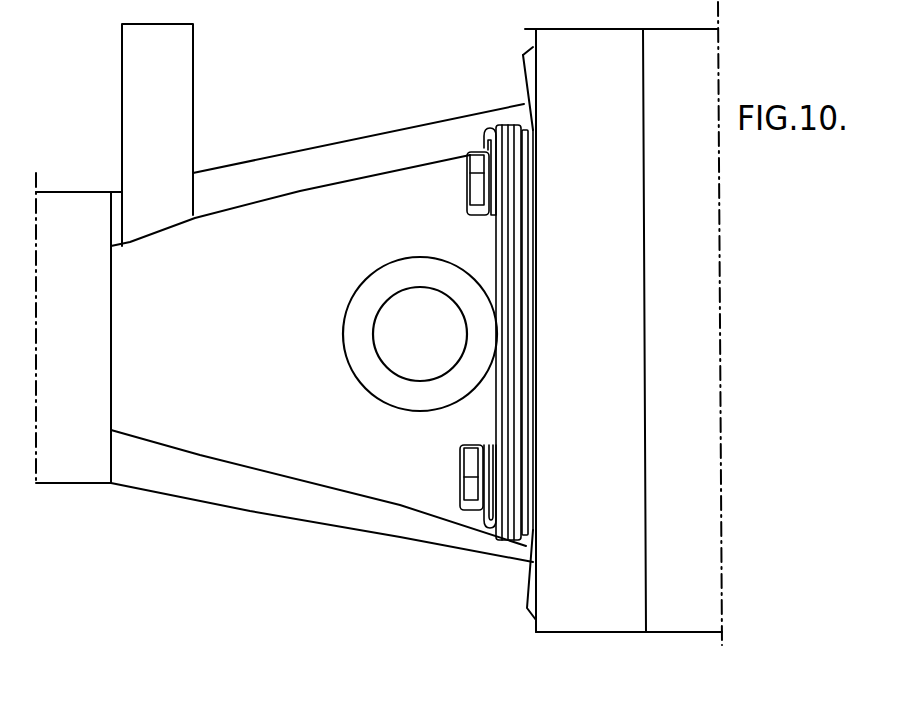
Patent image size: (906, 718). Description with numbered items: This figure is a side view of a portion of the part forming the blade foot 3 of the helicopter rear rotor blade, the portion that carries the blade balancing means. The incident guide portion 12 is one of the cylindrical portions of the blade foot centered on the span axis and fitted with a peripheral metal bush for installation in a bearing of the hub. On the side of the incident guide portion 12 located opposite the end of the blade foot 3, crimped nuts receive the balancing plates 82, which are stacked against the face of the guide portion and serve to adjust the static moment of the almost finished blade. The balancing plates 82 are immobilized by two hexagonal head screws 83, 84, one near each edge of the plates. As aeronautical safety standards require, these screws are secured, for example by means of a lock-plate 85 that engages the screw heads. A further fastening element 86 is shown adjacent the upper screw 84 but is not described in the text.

The blade foot 3 is at (252, 523).
The incident guide portion 12 is at (607, 563).
The balancing plates 82 is at (507, 542).
The hexagonal head screw 83 is at (470, 497).
The hexagonal head screw 84 is at (473, 155).
The lock-plate 85 is at (486, 530).
The clip 86 is at (490, 126).